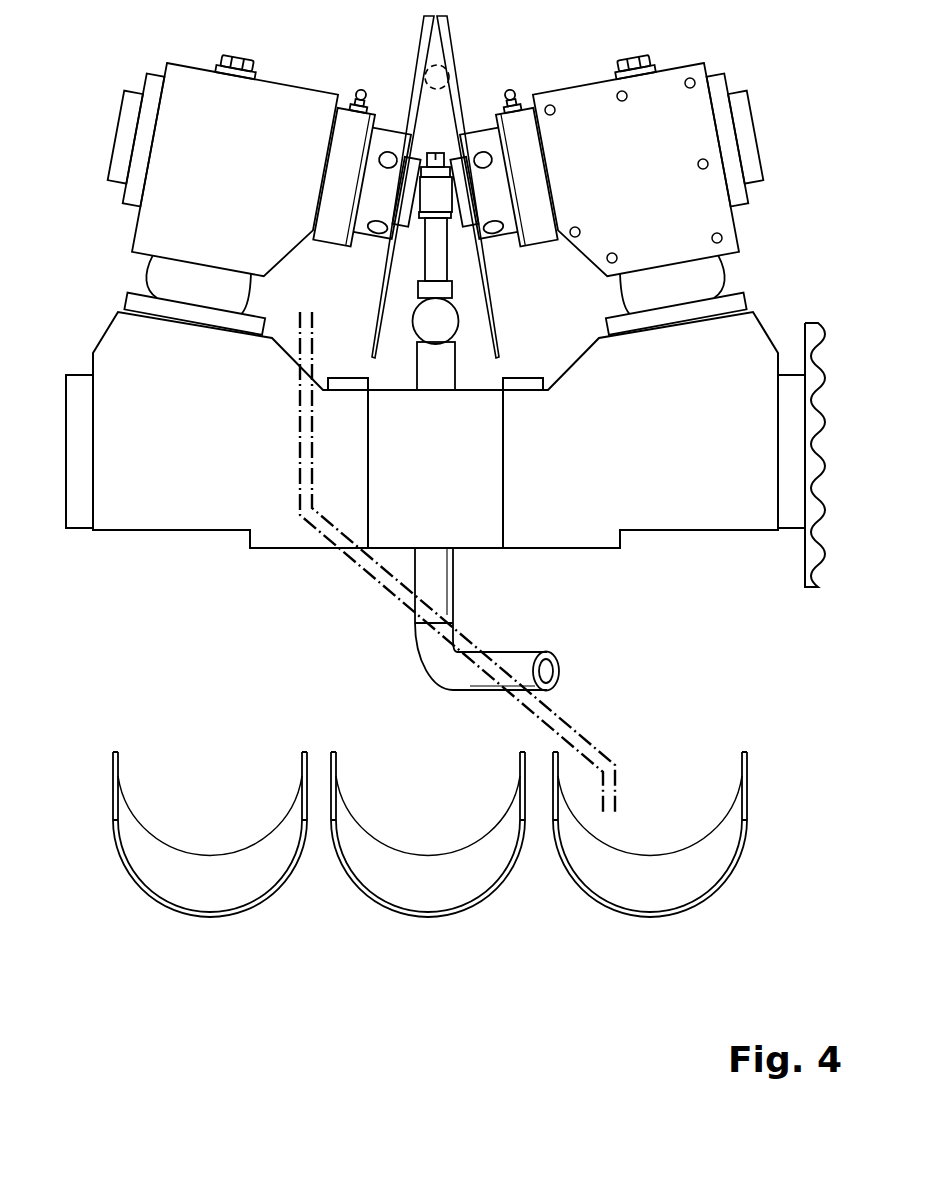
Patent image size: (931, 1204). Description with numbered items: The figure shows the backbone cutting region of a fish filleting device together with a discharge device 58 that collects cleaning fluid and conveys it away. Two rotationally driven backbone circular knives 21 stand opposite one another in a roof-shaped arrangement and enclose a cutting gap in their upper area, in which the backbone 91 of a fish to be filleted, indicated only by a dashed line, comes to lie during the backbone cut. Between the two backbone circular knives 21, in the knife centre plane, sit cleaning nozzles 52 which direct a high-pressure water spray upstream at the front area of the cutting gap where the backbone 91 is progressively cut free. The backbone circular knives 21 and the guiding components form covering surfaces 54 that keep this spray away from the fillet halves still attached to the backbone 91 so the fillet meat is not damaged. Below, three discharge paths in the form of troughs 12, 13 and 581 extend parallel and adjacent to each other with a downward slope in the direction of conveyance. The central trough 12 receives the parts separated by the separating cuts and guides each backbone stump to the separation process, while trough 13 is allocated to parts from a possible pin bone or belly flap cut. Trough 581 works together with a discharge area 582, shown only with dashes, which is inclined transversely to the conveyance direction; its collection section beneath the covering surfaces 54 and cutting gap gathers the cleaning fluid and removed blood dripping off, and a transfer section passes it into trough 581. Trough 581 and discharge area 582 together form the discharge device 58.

The trough 12 is at (427, 921).
The trough 13 is at (208, 921).
The backbone circular knives 21 is at (449, 56).
The cleaning nozzles 52 is at (432, 153).
The covering surfaces 54 is at (428, 42).
The discharge device 58 is at (404, 686).
The backbone 91 is at (463, 89).
The trough 581 is at (649, 921).
The discharge area 582 is at (581, 744).